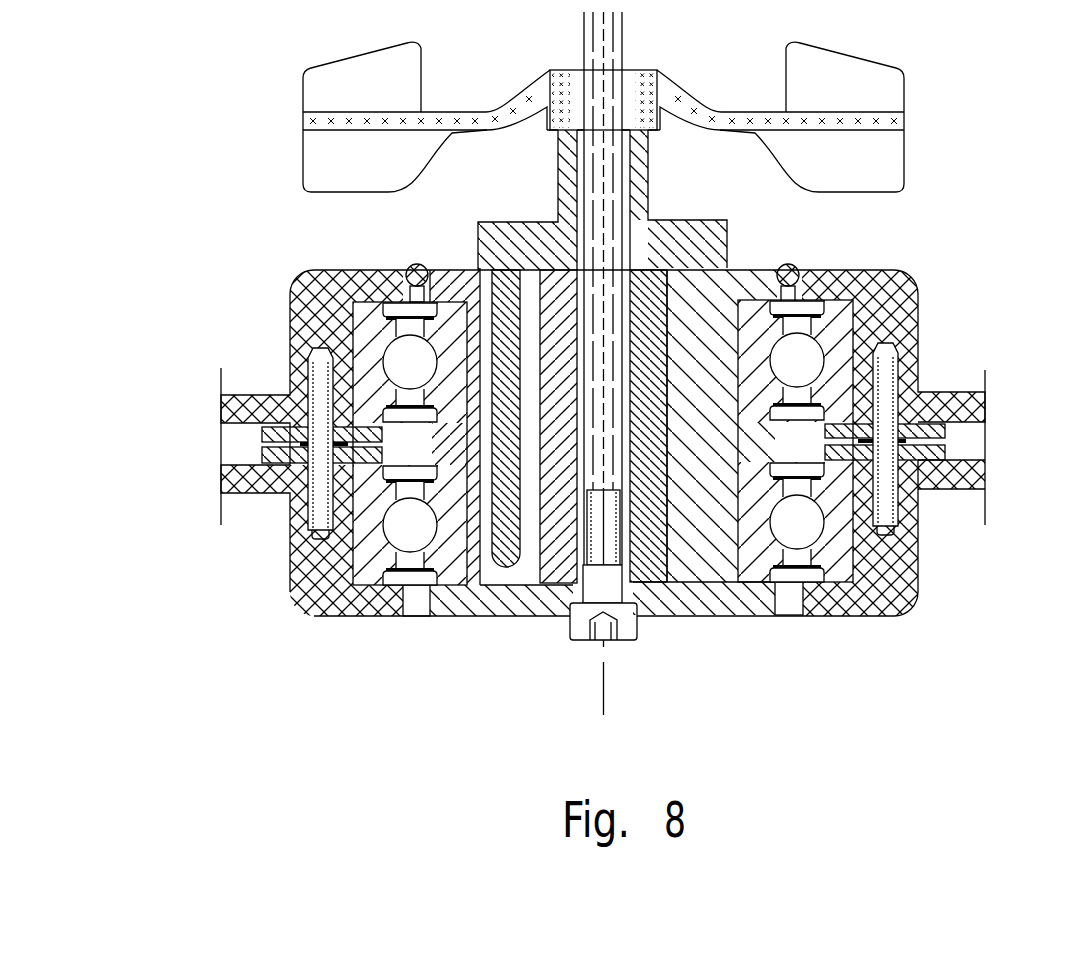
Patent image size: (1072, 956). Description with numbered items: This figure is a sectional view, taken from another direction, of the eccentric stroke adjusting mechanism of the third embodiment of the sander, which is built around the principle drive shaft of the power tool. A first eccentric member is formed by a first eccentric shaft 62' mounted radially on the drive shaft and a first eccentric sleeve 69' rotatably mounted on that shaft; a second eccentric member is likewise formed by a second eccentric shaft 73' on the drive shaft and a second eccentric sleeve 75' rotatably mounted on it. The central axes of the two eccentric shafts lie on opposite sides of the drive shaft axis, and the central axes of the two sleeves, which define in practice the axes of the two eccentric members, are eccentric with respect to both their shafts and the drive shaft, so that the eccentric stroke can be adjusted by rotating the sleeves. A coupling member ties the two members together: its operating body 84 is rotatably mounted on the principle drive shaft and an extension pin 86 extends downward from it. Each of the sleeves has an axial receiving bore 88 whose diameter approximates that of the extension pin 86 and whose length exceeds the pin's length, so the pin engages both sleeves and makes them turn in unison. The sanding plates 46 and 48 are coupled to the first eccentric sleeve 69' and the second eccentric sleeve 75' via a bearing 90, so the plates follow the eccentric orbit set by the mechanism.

The sanding plate 46 is at (303, 343).
The sanding plate 48 is at (910, 608).
The first eccentric shaft 62' is at (711, 398).
The first eccentric sleeve 69' is at (835, 426).
The second eccentric shaft 73' is at (527, 485).
The second eccentric sleeve 75' is at (745, 593).
The operating body 84 is at (652, 222).
The extension pin 86 is at (480, 245).
The axial receiving bore 88 is at (483, 578).
The bearing 90 is at (298, 282).